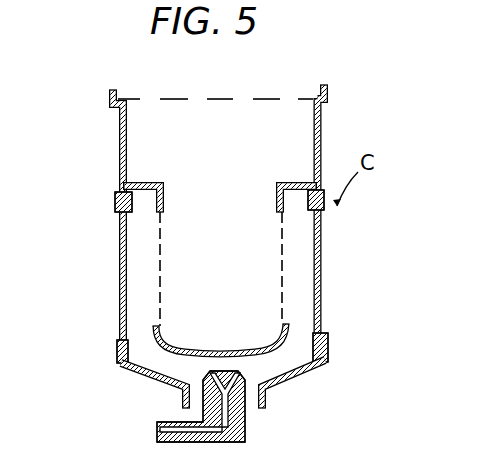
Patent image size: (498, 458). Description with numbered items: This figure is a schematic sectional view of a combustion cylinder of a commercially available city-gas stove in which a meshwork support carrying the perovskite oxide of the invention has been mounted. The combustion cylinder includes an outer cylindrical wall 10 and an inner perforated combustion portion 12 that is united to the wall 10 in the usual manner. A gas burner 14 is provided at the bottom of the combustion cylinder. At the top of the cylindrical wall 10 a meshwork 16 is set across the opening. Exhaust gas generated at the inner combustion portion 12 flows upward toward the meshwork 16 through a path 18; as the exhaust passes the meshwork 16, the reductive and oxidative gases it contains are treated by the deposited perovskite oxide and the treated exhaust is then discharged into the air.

The outer cylindrical wall 10 is at (252, 252).
The inner perforated combustion portion 12 is at (245, 405).
The gas burner 14 is at (283, 298).
The meshwork 16 is at (267, 98).
The path 18 is at (275, 150).